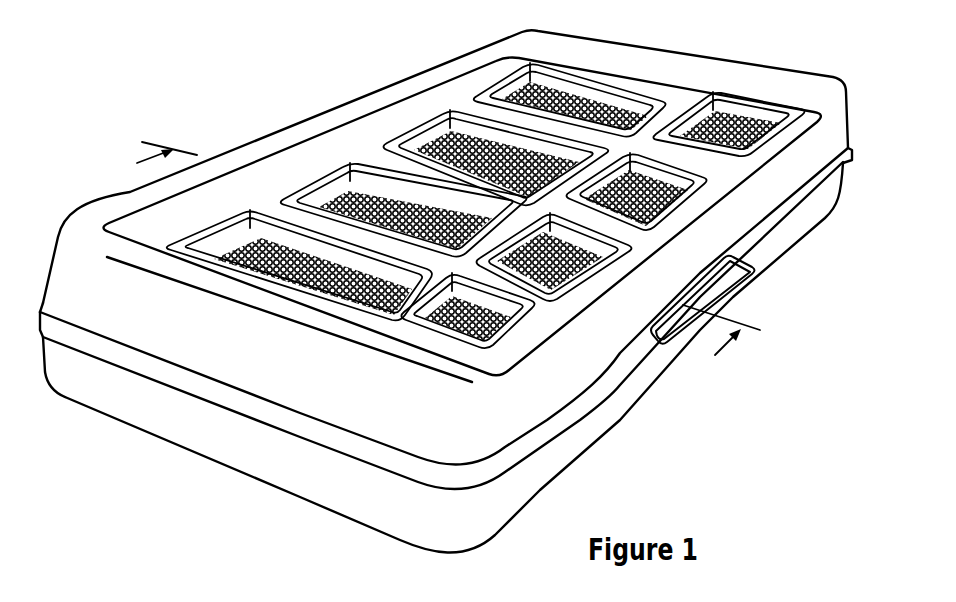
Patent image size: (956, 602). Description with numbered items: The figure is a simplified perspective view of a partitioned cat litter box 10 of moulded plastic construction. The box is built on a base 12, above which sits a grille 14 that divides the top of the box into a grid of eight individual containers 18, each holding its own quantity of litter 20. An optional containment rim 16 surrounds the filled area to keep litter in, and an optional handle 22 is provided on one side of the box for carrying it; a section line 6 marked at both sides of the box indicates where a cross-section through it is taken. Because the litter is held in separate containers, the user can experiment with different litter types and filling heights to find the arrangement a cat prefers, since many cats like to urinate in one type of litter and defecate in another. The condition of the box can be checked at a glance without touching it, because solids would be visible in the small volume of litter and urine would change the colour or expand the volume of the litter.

The section line 6- 6 is at (440, 258).
The partitioned cat litter box 10 is at (645, 441).
The base 12 is at (365, 497).
The grille 14 is at (385, 313).
The containment rim 16 is at (268, 375).
The containers 18 is at (363, 185).
The litter 20 is at (547, 80).
The handle 22 is at (752, 276).